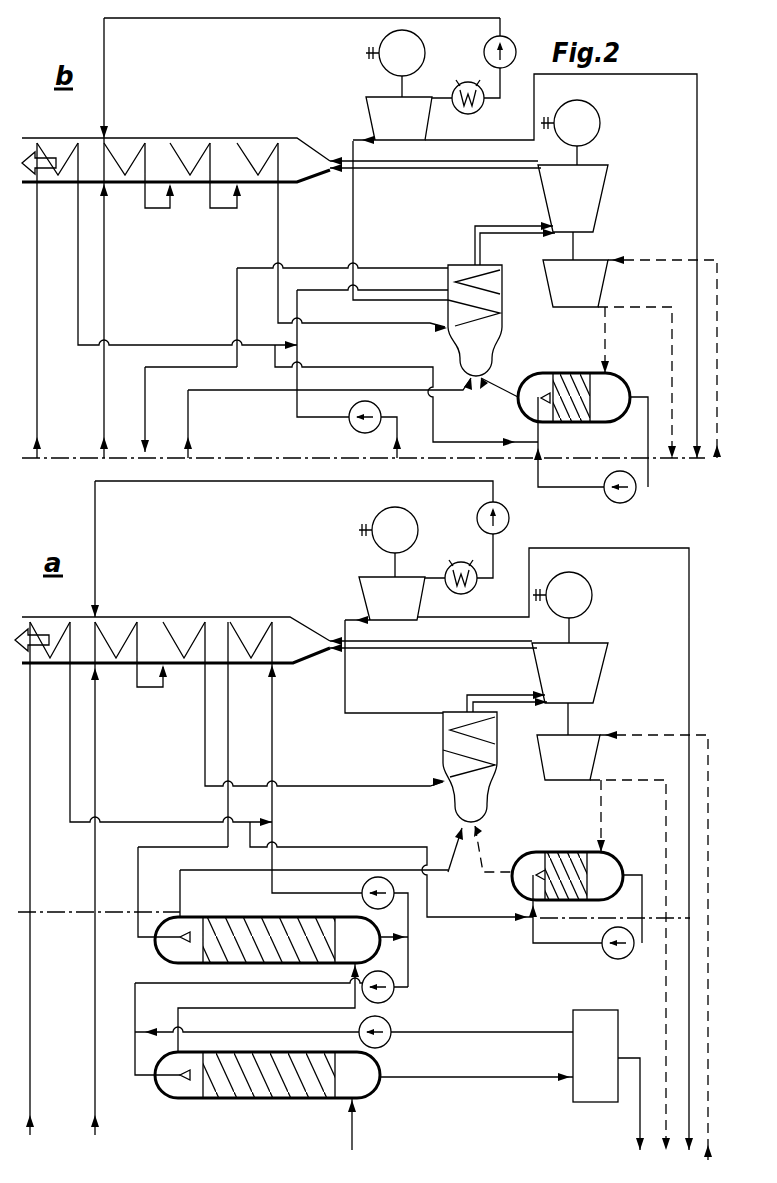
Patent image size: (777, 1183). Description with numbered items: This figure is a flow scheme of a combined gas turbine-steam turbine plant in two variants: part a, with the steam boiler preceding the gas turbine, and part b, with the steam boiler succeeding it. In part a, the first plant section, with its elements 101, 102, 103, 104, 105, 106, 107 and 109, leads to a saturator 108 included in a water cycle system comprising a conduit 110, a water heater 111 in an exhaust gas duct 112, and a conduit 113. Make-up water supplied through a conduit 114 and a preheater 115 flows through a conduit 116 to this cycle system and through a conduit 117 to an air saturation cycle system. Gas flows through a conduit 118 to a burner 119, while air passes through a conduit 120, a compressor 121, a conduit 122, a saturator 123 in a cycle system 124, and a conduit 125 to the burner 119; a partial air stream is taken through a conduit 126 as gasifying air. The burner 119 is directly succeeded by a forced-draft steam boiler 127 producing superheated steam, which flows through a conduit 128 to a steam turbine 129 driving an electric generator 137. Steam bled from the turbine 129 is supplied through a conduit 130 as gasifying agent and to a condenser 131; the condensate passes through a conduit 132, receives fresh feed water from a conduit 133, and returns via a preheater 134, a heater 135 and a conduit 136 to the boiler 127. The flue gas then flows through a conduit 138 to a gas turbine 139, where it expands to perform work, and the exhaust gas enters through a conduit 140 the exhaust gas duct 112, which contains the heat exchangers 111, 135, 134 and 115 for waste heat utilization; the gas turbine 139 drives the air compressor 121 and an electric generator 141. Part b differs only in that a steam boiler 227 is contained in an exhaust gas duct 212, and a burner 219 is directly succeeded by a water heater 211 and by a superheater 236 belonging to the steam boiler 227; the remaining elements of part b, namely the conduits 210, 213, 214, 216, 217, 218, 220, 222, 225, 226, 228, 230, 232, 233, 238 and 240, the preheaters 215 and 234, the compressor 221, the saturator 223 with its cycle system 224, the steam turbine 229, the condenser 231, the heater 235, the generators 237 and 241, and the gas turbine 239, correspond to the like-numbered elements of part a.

The fuel feed line 101 is at (369, 1124).
The gasification reactor 102 is at (267, 1075).
The product gas line 103 is at (476, 1062).
The gas treatment unit 104 is at (595, 1056).
The gas outlet line 105 is at (623, 1104).
The circulation pump 106 is at (354, 1029).
The return line 107 is at (293, 1007).
The saturator 108 is at (273, 905).
The connecting line 109 is at (242, 973).
The conduit 110 is at (314, 804).
The water heater 111 is at (251, 621).
The exhaust gas duct 112 is at (172, 640).
The conduit 113 is at (245, 734).
The conduit 114 is at (44, 878).
The preheater 115 is at (50, 621).
The conduit 116 is at (171, 724).
The conduit 117 is at (335, 871).
The conduit 118 is at (441, 847).
The burner 119 is at (483, 767).
The conduit 120 is at (656, 934).
The compressor 121 is at (568, 757).
The conduit 122 is at (581, 816).
The saturator 123 is at (567, 876).
The cycle system 124 is at (585, 917).
The conduit 125 is at (495, 847).
The conduit 126 is at (630, 952).
The forced-draft steam boiler 127 is at (447, 747).
The conduit 128 is at (394, 669).
The steam turbine 129 is at (385, 600).
The conduit 130 is at (555, 837).
The condenser 131 is at (451, 564).
The conduit 132 is at (302, 529).
The conduit 133 is at (78, 878).
The preheater 134 is at (114, 569).
The heater 135 is at (171, 635).
The conduit 136 is at (325, 707).
The electric generator 137 is at (374, 537).
The conduit 138 is at (507, 690).
The gas turbine 139 is at (570, 689).
The conduit 140 is at (433, 656).
The electric generator 141 is at (579, 607).
The circulation pump 210 is at (372, 371).
The water heater 211 is at (453, 296).
The exhaust gas duct 212 is at (176, 160).
The connecting line 213 is at (318, 315).
The outlet line 214 is at (53, 300).
The heat exchanger 215 is at (57, 143).
The connecting line 216 is at (187, 246).
The connecting line 217 is at (339, 396).
The feed line 218 is at (328, 418).
The burner 219 is at (488, 320).
The steam line 220 is at (664, 347).
The turbine 221 is at (575, 283).
The condensate line 222 is at (586, 340).
The heat exchanger drum 223 is at (574, 397).
The circulation pump 224 is at (610, 451).
The connecting line 225 is at (497, 402).
The outlet line 226 is at (637, 382).
The steam boiler 227 is at (244, 159).
The compressed gas line 228 is at (381, 220).
The compressor 229 is at (392, 120).
The exhaust line 230 is at (563, 266).
The cooler 231 is at (458, 85).
The pump 232 is at (478, 58).
The supply line 233 is at (82, 298).
The return line 234 is at (300, 96).
The heat exchanger 235 is at (177, 159).
The superheater 236 is at (362, 237).
The generator 237 is at (381, 57).
The steam line 238 is at (515, 233).
The turbine 239 is at (573, 212).
The exhaust line 240 is at (435, 178).
The generator 241 is at (589, 132).